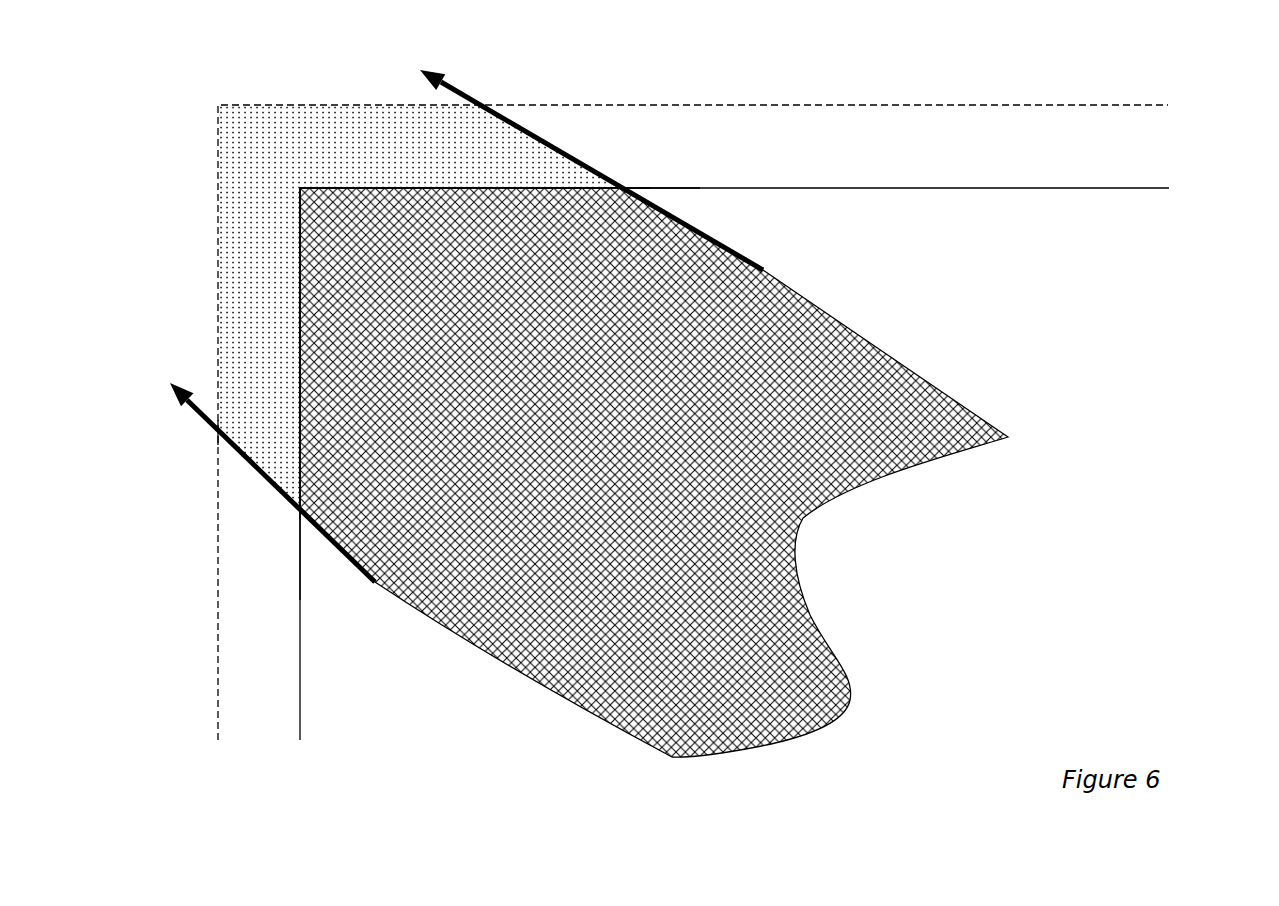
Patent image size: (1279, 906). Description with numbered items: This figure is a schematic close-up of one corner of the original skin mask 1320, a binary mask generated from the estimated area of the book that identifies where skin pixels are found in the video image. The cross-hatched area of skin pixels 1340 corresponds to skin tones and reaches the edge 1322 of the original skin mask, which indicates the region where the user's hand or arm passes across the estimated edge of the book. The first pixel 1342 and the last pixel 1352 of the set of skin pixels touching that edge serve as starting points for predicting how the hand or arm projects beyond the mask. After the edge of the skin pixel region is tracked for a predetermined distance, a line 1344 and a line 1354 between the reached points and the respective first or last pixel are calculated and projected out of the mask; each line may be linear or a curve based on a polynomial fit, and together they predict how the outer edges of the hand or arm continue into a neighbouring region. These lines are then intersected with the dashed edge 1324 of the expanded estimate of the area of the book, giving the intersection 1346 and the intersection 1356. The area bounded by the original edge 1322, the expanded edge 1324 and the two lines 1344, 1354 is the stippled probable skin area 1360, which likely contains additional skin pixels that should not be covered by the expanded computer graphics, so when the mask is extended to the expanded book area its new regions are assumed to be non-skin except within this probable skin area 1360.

The original skin mask 1320 is at (720, 394).
The edge of the original skin mask 1322 is at (1183, 186).
The edge of the expanded estimate of the area of the book 1324 is at (1183, 103).
The area of skin pixels 1340 is at (846, 458).
The first pixel 1342 is at (628, 185).
The line 1344 is at (551, 138).
The intersection 1346 is at (483, 102).
The last pixel 1352 is at (297, 508).
The line 1354 is at (238, 466).
The intersection 1356 is at (216, 437).
The probable skin area 1360 is at (261, 146).